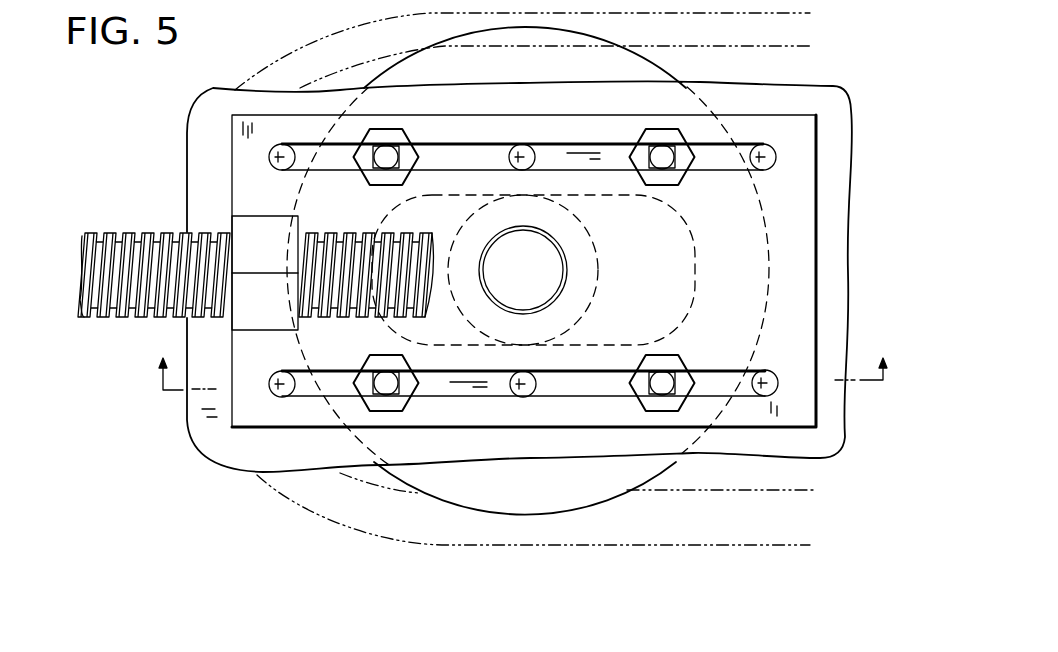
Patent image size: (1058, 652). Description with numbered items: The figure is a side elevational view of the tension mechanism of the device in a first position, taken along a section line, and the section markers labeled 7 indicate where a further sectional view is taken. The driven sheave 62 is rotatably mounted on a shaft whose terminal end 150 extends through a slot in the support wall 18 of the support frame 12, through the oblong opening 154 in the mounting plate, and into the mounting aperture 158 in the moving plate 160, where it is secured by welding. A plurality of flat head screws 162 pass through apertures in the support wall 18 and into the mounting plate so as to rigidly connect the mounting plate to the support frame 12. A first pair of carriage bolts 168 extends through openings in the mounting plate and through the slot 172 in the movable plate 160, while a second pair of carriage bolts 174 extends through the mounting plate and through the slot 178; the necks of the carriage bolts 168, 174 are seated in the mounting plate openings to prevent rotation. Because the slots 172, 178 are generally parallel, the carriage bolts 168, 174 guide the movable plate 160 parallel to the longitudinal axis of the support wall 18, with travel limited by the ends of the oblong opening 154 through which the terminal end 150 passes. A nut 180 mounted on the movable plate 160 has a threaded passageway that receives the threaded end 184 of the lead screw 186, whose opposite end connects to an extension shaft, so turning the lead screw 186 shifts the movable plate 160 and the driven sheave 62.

The section line 7- 7 is at (518, 391).
The support frame 12 is at (820, 472).
The support wall 18 is at (836, 424).
The driven sheave 62 is at (487, 518).
The terminal end 150 is at (523, 270).
The oblong opening 154 is at (690, 300).
The mounting aperture 158 is at (542, 300).
The moving plate 160 is at (823, 282).
The flat head screws 162 is at (273, 158).
The first pair of carriage bolts 168 is at (393, 157).
The slot 172 is at (558, 150).
The second pair of carriage bolts 174 is at (386, 393).
The slot 178 is at (583, 395).
The nut 180 is at (243, 237).
The threaded end 184 is at (432, 212).
The lead screw 186 is at (118, 313).